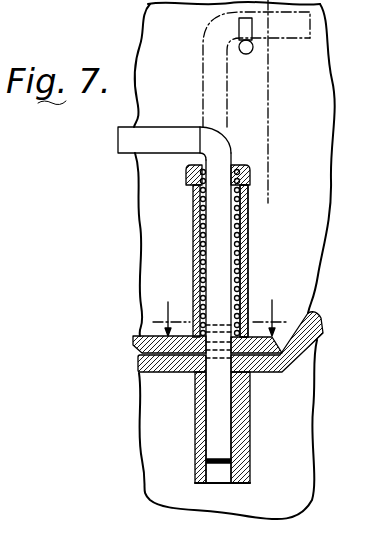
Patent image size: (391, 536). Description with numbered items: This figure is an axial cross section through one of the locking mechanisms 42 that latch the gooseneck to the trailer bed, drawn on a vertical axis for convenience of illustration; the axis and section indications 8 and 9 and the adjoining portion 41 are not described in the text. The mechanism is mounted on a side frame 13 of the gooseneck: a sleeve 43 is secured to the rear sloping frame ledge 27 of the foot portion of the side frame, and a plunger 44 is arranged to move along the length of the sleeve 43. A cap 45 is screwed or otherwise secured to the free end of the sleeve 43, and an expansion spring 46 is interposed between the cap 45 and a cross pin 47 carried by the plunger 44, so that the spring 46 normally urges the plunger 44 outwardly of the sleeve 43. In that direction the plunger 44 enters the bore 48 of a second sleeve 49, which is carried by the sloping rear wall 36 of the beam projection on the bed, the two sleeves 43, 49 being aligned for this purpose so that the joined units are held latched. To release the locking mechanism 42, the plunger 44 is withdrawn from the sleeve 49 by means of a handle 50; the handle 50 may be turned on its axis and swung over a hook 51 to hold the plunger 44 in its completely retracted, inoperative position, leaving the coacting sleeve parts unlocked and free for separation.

The side frame 13 is at (313, 100).
The conduit 41 is at (362, 7).
The handle 50 is at (128, 142).
The hook 51 is at (252, 47).
The axis line 8 is at (272, 185).
The plunger 44 is at (220, 217).
The cap 45 is at (187, 163).
The locking mechanism 42 is at (183, 235).
The sleeve 43 is at (246, 240).
The expansion spring 46 is at (236, 257).
The section line 9- 9 is at (220, 307).
The rear sloping frame ledge 27 is at (287, 350).
The cross pin 47 is at (168, 372).
The rear wall 36 is at (263, 370).
The sleeve 49 is at (252, 402).
The bore 48 is at (230, 470).